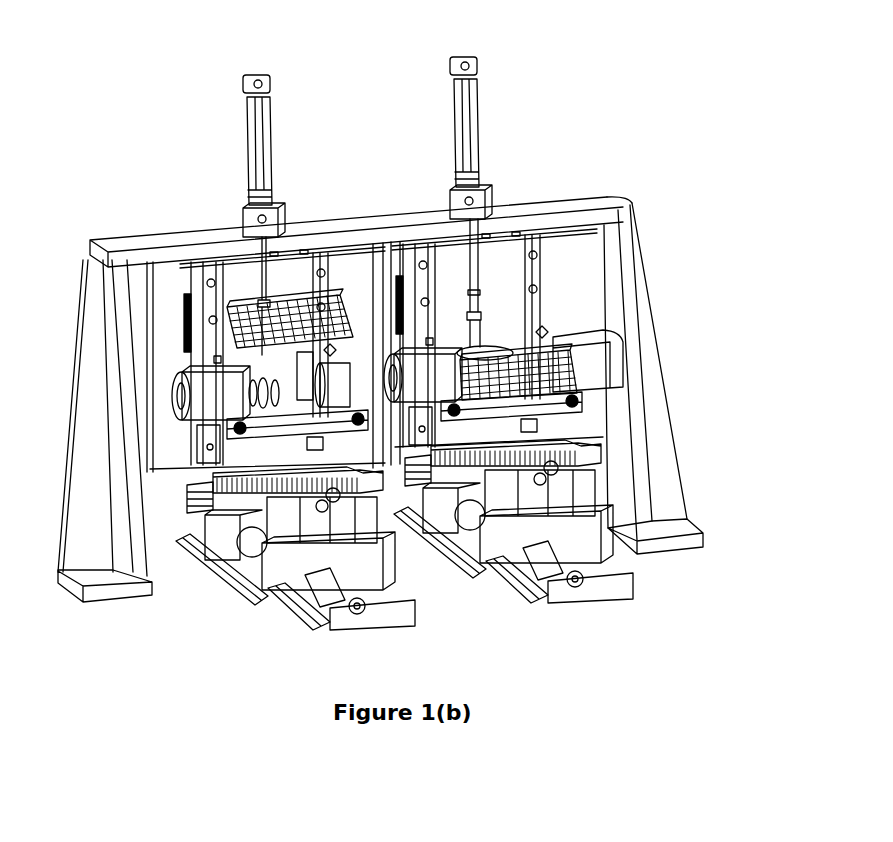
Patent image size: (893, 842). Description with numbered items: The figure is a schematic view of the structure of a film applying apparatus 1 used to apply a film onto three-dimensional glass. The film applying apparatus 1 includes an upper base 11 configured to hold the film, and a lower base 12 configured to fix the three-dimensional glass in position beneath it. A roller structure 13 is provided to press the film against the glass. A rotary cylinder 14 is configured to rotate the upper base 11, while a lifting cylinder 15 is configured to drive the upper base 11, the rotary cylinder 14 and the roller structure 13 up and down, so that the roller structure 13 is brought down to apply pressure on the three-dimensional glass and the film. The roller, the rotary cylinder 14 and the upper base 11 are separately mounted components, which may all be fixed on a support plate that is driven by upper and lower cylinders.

The film applying apparatus 1 is at (490, 205).
The upper base 11 is at (515, 357).
The lower base 12 is at (555, 440).
The roller structure 13 is at (565, 400).
The rotary cylinder 14 is at (577, 355).
The lifting cylinder 15 is at (477, 282).